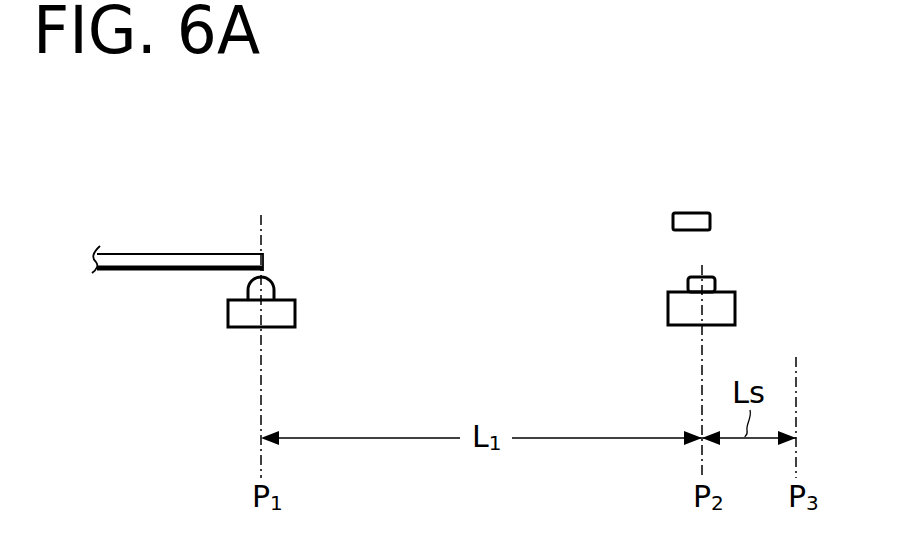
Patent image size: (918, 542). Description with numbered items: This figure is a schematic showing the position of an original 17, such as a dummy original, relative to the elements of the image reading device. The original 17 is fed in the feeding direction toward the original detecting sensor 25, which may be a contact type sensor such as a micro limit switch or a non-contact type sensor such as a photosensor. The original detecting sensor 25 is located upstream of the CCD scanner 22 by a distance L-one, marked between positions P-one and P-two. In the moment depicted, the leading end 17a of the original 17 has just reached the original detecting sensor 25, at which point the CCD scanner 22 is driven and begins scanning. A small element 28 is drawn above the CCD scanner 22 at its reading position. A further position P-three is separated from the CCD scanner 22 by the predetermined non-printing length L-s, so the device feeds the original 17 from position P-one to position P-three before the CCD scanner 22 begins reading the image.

The original 17 is at (180, 228).
The leading end 17a is at (263, 260).
The original detecting sensor 25 is at (229, 312).
The shutter / flag 28 is at (693, 213).
The CCD scanner 22 is at (735, 307).